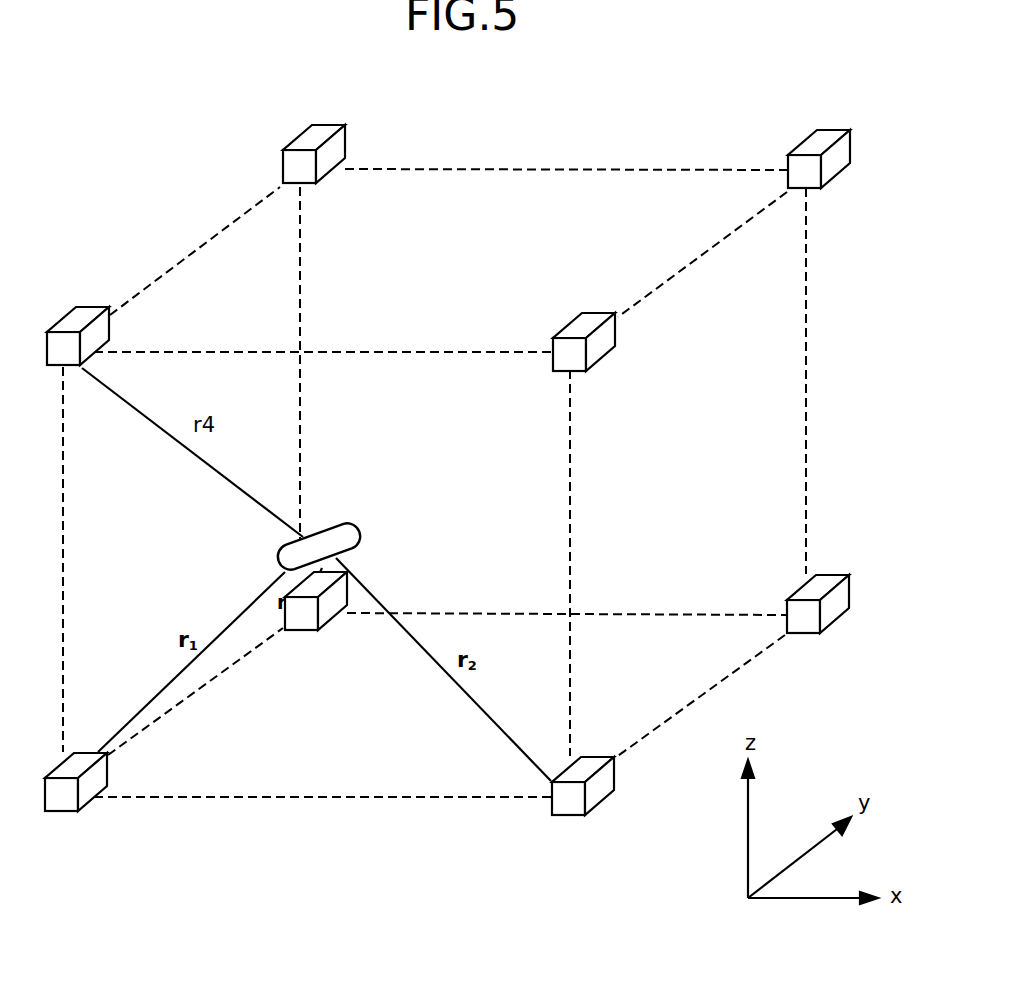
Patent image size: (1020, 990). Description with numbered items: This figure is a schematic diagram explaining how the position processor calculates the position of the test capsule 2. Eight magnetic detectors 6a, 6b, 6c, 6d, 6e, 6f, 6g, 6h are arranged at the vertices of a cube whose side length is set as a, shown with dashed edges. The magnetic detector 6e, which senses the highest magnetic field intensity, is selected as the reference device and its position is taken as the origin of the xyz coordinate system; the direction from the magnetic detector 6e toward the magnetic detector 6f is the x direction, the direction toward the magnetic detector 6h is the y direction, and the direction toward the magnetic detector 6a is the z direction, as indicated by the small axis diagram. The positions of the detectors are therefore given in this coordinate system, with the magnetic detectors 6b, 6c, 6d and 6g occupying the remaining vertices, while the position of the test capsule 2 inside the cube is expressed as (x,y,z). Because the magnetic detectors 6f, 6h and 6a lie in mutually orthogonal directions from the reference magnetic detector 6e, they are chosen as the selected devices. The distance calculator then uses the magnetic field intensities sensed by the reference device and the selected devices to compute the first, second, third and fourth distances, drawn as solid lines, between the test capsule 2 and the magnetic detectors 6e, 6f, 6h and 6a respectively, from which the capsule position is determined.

The test capsule 2 is at (328, 537).
The magnetic detector 6a is at (82, 310).
The magnetic detector 6b is at (587, 320).
The magnetic detector 6c is at (823, 137).
The magnetic detector 6d is at (320, 132).
The magnetic detector 6e is at (80, 760).
The magnetic detector 6f is at (592, 765).
The magnetic detector 6g is at (823, 583).
The magnetic detector 6h is at (338, 590).